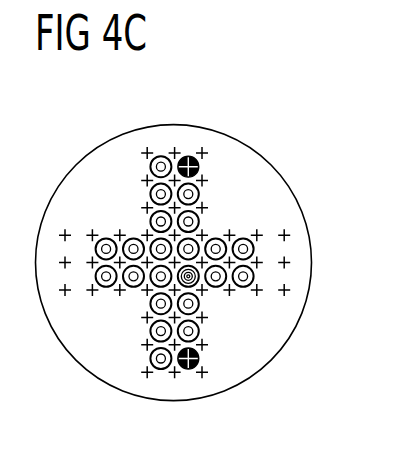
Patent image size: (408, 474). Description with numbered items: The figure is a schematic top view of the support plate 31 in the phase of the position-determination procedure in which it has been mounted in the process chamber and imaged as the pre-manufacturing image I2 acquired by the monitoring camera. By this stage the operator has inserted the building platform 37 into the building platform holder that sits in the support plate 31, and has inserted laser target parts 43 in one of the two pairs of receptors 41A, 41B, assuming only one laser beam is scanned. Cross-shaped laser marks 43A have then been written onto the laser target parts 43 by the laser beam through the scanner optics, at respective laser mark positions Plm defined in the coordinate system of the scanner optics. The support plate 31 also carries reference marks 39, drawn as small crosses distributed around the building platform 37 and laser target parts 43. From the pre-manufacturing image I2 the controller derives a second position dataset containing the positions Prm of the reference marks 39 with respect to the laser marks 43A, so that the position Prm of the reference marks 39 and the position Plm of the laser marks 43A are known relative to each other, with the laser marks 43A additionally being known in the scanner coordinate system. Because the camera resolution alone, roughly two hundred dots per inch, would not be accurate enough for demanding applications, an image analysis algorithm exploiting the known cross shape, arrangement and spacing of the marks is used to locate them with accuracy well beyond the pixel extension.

The support plate 31 is at (266, 157).
The building platform 37 is at (196, 286).
The reference marks 39 is at (288, 263).
The first pair of receptors 41A is at (185, 139).
The second pair of receptors 41B is at (185, 394).
The laser target parts 43 is at (200, 178).
The laser marks 43A is at (173, 150).
The laser mark position Plm is at (211, 143).
The position of the reference marks Prm is at (307, 249).
The pre-manufacturing image I2 is at (314, 168).